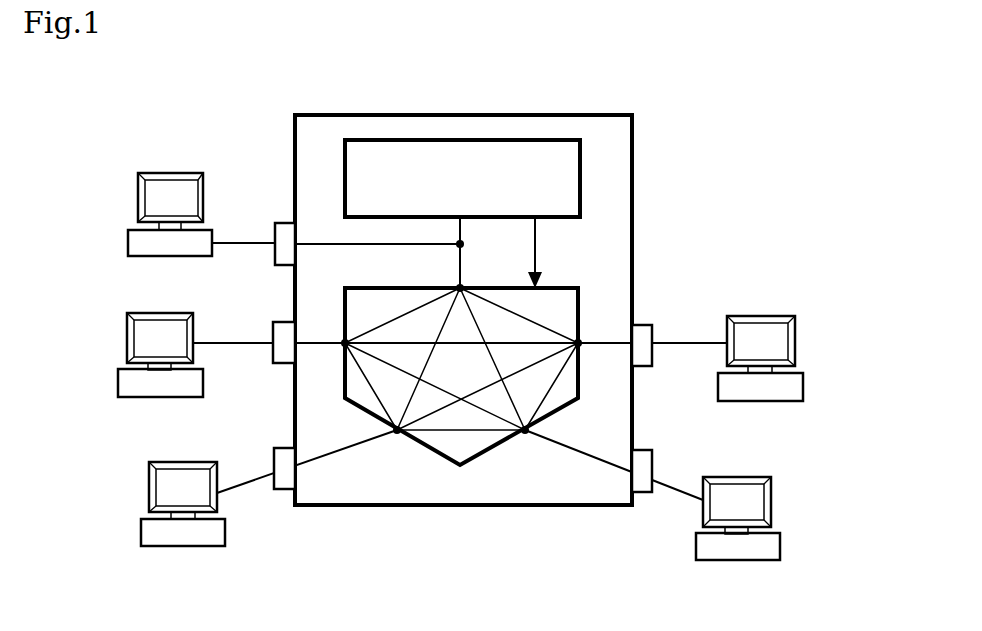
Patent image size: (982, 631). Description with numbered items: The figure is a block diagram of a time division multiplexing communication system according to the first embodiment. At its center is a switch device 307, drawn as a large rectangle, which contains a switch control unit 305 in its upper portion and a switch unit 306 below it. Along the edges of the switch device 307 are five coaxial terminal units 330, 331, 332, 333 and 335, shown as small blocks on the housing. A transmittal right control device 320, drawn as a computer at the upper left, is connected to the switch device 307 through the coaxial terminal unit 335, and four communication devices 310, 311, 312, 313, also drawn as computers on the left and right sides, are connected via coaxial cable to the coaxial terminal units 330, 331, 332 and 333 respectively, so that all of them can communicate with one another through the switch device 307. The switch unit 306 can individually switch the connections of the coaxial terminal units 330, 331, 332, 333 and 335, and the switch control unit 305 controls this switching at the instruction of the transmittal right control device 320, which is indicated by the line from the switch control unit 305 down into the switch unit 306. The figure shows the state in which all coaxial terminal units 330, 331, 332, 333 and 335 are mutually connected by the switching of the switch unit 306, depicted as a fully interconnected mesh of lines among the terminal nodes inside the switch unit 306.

The switch device 307 is at (322, 115).
The switch control unit 305 is at (580, 169).
The switch unit 306 is at (558, 288).
The coaxial terminal unit 335 is at (275, 228).
The coaxial terminal unit 330 is at (273, 330).
The coaxial terminal unit 331 is at (274, 456).
The coaxial terminal unit 332 is at (652, 460).
The coaxial terminal unit 333 is at (652, 330).
The transmittal right control device 320 is at (138, 195).
The communication device 310 is at (127, 325).
The communication device 311 is at (149, 482).
The communication device 312 is at (771, 500).
The communication device 313 is at (795, 330).